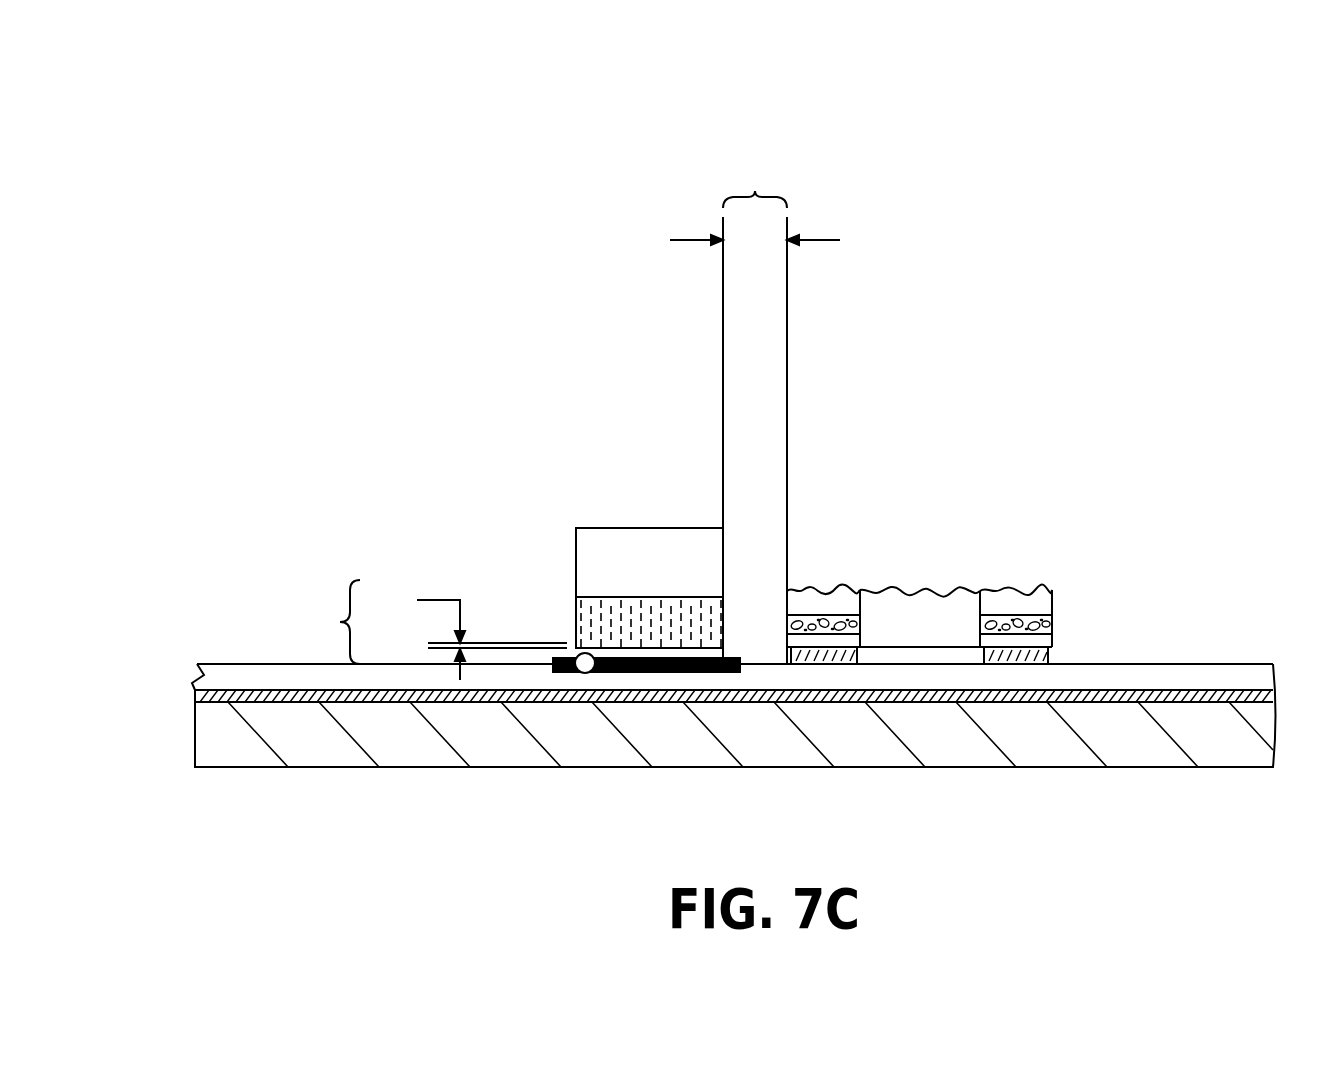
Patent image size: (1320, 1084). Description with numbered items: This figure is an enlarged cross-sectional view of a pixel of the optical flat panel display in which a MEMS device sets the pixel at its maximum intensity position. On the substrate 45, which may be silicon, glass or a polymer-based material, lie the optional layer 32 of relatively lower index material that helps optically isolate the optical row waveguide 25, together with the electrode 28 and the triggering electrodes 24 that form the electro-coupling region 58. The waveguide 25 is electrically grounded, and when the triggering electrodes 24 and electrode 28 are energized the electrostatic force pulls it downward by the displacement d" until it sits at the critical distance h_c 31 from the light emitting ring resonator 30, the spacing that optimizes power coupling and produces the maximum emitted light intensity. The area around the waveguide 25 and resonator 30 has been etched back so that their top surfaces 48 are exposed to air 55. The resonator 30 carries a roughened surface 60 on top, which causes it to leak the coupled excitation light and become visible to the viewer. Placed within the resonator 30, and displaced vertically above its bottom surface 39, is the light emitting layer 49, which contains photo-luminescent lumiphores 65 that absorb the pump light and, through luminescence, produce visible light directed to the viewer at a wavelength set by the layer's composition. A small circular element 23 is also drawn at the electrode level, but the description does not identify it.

The air 55 is at (364, 315).
The critical distance h_c 31 is at (755, 191).
The top surfaces 48 is at (856, 575).
The roughened surface 60 is at (949, 446).
The optical row waveguide 25 is at (597, 553).
The light emitting layer 49 is at (978, 613).
The electro-coupling region 58 is at (332, 617).
The optional layer 32 is at (310, 695).
The light emitting ring resonator 30 is at (1034, 557).
The read sensor 23 is at (582, 672).
The triggering electrodes 24 is at (672, 672).
The column electrode 28 is at (770, 665).
The lumiphores 65 is at (848, 628).
The substrate 45 is at (1000, 735).
The bottom surface 39 is at (1038, 664).